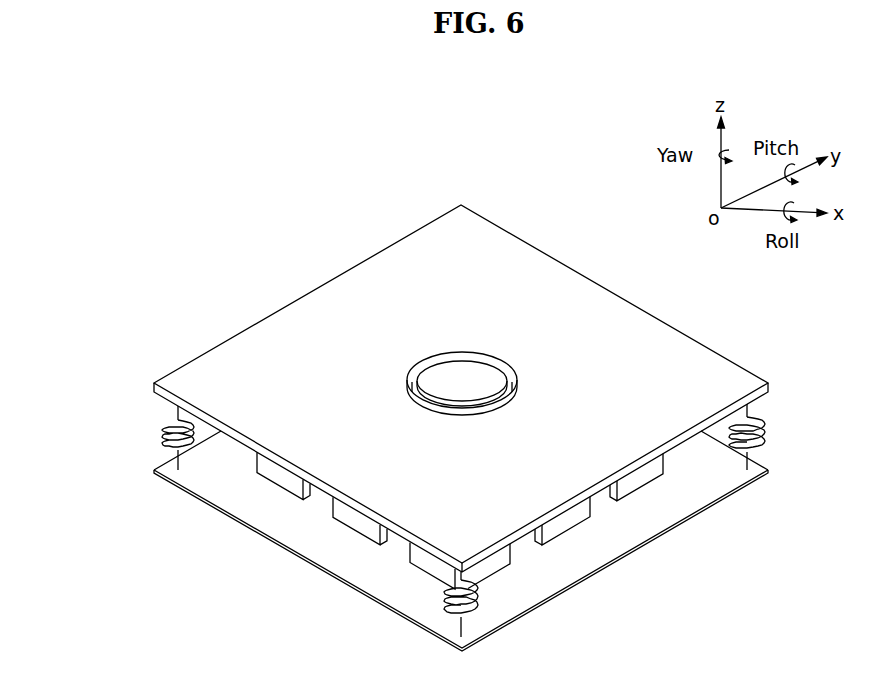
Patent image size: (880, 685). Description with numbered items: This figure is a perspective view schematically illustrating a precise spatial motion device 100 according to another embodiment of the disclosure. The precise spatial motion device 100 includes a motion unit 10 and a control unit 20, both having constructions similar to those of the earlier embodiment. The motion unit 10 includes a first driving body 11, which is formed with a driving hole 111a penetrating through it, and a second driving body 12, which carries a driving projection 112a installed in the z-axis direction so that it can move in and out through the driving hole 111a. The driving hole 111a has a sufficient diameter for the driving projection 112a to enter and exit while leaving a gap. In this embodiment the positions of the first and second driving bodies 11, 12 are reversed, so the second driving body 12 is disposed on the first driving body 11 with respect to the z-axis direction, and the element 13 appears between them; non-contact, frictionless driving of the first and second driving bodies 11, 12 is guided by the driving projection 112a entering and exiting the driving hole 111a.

The precise spatial motion device 100 is at (481, 128).
The motion unit 10 is at (98, 347).
The first driving body 11 is at (193, 380).
The second driving body 12 is at (203, 487).
The elastic member (spring) 13 is at (153, 429).
The driving hole 111a is at (428, 362).
The driving projection 112a is at (487, 375).
The control unit 20 is at (608, 521).